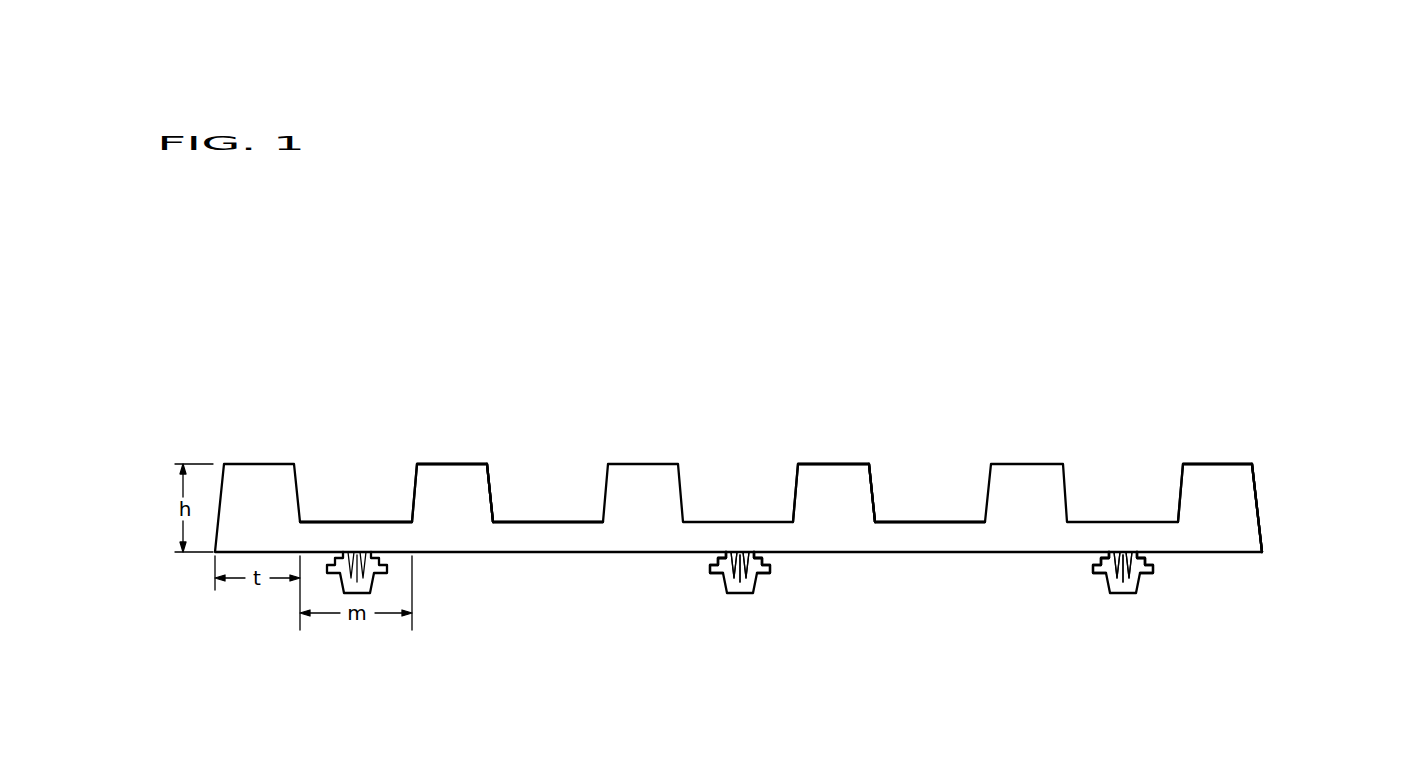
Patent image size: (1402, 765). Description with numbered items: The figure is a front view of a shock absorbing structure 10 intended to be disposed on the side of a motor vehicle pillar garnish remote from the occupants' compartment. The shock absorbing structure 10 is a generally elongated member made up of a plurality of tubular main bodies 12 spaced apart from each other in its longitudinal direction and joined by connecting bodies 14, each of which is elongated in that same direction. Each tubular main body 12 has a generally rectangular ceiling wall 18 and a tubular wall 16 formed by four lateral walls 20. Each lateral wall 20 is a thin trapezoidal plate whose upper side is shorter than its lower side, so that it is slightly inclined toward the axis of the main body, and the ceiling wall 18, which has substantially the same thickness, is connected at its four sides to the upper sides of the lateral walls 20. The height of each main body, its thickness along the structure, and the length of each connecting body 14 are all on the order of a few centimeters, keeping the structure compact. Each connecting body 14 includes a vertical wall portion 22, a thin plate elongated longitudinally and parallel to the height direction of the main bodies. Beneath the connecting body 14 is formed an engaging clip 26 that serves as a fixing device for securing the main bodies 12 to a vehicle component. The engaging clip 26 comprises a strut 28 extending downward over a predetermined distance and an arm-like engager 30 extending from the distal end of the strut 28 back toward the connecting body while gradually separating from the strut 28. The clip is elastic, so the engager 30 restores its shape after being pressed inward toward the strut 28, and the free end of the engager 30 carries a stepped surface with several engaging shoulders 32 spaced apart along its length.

The shock absorbing structure 10 is at (1057, 370).
The tubular main body 12 is at (482, 384).
The connecting body 14 is at (358, 533).
The tubular wall 16 is at (478, 487).
The ceiling wall 18 is at (448, 464).
The lateral wall 20 is at (907, 508).
The vertical wall portion 22 is at (642, 521).
The engaging clip 26 is at (745, 601).
The strut 28 is at (738, 593).
The engager 30 is at (727, 582).
The engaging shoulder 32 is at (702, 557).